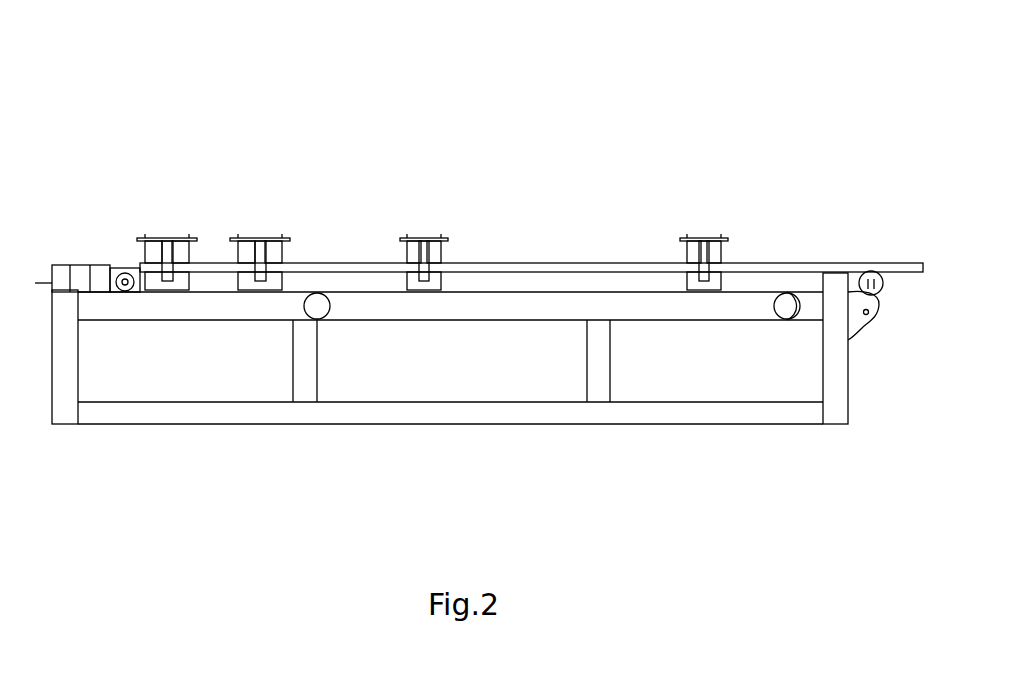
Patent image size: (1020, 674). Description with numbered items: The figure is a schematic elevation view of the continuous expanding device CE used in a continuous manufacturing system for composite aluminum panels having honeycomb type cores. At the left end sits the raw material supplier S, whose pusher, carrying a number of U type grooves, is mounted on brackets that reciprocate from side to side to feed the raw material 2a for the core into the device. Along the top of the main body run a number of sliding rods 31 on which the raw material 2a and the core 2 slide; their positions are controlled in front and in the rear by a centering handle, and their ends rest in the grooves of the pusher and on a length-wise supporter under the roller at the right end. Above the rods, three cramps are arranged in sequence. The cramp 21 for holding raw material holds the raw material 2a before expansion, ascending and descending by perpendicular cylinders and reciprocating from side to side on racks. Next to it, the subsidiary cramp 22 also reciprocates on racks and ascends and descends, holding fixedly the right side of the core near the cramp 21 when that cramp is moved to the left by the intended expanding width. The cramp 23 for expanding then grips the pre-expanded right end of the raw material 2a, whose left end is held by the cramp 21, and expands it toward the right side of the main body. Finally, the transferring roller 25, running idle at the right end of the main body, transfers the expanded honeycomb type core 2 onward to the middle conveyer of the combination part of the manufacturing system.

The core 2 is at (548, 263).
The raw material 2a is at (132, 258).
The cramp for holding raw material 21 is at (167, 237).
The subsidiary cramp 22 is at (262, 238).
The cramp for expanding a raw material 23 is at (428, 238).
The transferring roller 25 is at (867, 280).
The sliding rods 31 is at (563, 277).
The raw material supplier S is at (80, 260).
The continuous expanding device CE is at (389, 178).